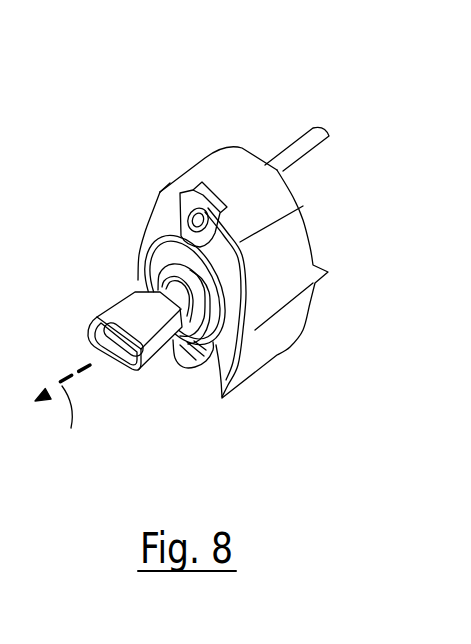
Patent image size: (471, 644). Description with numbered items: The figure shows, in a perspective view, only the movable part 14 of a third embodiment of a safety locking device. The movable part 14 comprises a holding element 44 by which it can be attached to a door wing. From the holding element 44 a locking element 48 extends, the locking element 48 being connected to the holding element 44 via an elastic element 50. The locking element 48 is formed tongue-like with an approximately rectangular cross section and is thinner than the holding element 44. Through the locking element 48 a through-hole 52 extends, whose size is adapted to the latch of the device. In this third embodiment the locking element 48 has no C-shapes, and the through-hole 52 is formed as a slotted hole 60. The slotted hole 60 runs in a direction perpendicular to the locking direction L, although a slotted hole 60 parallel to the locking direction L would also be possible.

The movable part 14 is at (203, 119).
The holding element 44 is at (293, 226).
The locking element 48 is at (182, 365).
The elastic element 50 is at (222, 398).
The through-hole 52 is at (127, 342).
The slotted hole 60 is at (140, 352).